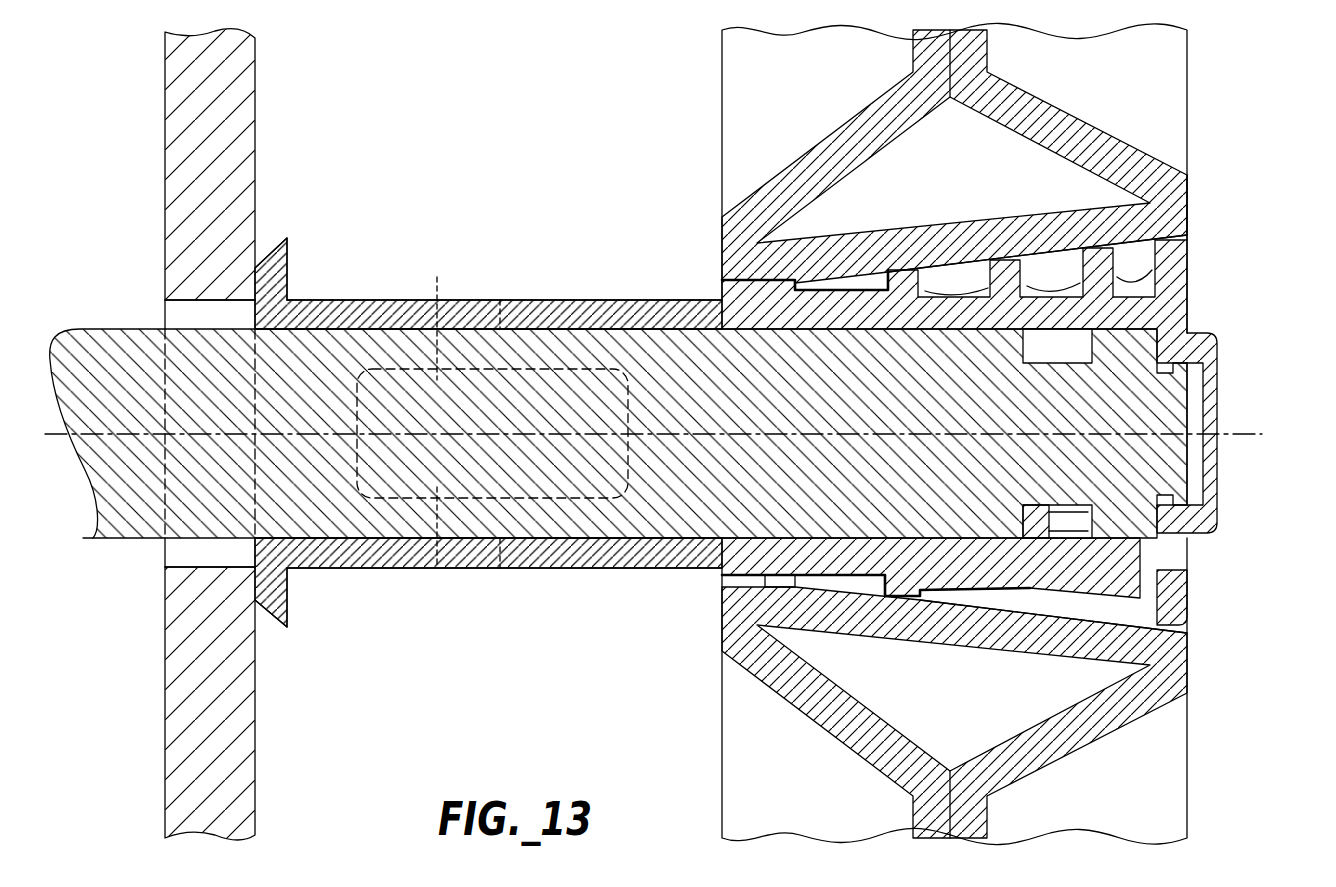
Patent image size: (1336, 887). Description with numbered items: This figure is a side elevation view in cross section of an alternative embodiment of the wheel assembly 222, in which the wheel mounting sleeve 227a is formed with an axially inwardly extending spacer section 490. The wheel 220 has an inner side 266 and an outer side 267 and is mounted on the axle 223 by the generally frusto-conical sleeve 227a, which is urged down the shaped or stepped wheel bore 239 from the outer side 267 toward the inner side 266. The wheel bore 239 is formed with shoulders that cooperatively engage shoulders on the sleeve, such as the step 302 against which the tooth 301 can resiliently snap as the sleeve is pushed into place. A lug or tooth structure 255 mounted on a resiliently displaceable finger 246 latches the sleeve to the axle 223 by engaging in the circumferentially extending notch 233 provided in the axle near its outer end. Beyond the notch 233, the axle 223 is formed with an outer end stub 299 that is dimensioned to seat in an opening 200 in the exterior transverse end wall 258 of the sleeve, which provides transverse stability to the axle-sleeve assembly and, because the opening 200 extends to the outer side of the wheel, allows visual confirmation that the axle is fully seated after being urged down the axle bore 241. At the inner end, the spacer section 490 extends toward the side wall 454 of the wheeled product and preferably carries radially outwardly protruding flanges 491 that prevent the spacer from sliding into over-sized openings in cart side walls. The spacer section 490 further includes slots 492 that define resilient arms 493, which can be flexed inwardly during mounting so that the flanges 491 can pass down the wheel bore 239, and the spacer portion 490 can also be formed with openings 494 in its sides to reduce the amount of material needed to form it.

The opening 200 is at (1218, 376).
The wheel 220 is at (1074, 114).
The wheel assembly 222 is at (1249, 164).
The axle 223 is at (547, 542).
The wheel mounting sleeve 227a is at (1189, 306).
The notch 233 is at (1132, 377).
The wheel bore 239 is at (957, 272).
The axle bore 241 is at (792, 343).
The resiliently displaceable finger 246 is at (1000, 595).
The tooth structure 255 is at (1067, 527).
The exterior transverse end wall 258 is at (1180, 593).
The inner side 266 is at (722, 137).
The outer side 267 is at (1190, 200).
The outer end stub 299 is at (1193, 443).
The tooth 301 is at (770, 278).
The step 302 is at (730, 280).
The side wall 454 is at (257, 97).
The spacer section 490 is at (455, 607).
The flanges 491 is at (288, 265).
The slots 492 is at (500, 300).
The resilient arms 493 is at (380, 300).
The openings 494 is at (437, 300).